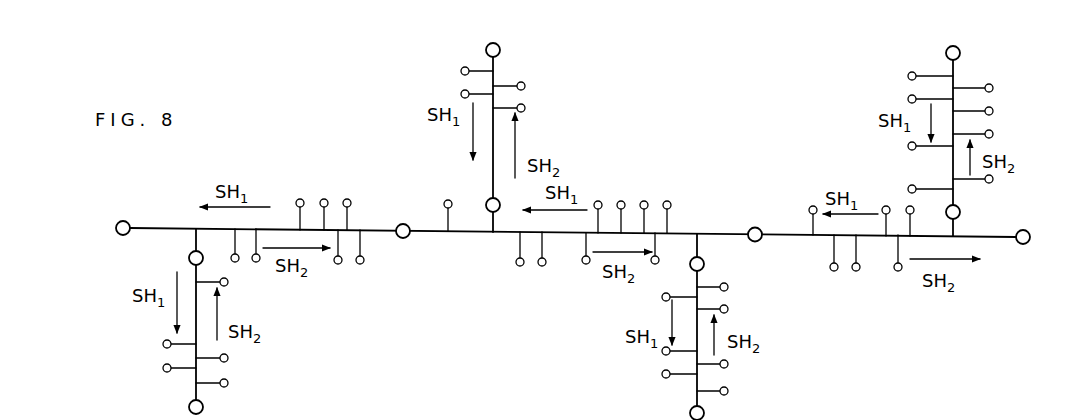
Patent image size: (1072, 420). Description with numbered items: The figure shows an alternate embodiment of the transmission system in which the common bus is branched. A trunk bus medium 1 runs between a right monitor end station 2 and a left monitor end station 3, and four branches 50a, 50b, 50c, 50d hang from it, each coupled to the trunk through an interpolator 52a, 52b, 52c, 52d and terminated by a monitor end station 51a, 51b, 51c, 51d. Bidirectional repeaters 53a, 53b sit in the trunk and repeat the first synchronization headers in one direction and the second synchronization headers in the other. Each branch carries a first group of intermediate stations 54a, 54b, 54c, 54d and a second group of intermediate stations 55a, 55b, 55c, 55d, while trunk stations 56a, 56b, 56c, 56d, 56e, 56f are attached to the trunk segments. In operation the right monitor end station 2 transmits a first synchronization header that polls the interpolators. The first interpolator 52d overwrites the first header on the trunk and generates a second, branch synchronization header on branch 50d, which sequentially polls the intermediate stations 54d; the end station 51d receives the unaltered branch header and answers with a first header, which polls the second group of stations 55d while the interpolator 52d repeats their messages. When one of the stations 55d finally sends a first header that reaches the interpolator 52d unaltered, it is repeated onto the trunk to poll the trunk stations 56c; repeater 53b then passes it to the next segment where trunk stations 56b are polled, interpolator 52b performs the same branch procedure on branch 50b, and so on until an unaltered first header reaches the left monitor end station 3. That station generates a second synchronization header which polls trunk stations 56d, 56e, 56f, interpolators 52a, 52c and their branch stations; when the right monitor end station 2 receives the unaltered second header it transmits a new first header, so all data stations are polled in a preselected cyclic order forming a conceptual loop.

The bus medium 1 is at (565, 237).
The right monitor end station 2 is at (1028, 244).
The left monitor end station 3 is at (117, 222).
The branch 50a is at (228, 284).
The branch 50b is at (490, 173).
The branch 50c is at (700, 303).
The branch 50d is at (950, 160).
The monitor end station 51a is at (188, 406).
The monitor end station 51b is at (500, 50).
The monitor end station 51c is at (705, 412).
The monitor end station 51d is at (945, 52).
The interpolator 52a is at (188, 258).
The interpolator 52b is at (486, 203).
The interpolator 52c is at (705, 264).
The interpolator 52d is at (960, 212).
The bidirectional repeater 53a is at (406, 238).
The bidirectional repeater 53b is at (757, 227).
The first group of intermediate stations 54a is at (163, 344).
The first group of intermediate stations 54b is at (529, 123).
The first group of intermediate stations 54c is at (662, 298).
The first group of intermediate stations 54d is at (997, 131).
The second group of intermediate stations 55a is at (228, 360).
The second group of intermediate stations 55b is at (461, 71).
The second group of intermediate stations 55c is at (728, 390).
The second group of intermediate stations 55d is at (908, 76).
The trunk stations 56a is at (347, 199).
The trunk stations 56b is at (666, 201).
The trunk stations 56c is at (909, 206).
The trunk stations 56d is at (339, 264).
The trunk stations 56e is at (540, 266).
The trunk stations 56f is at (855, 271).